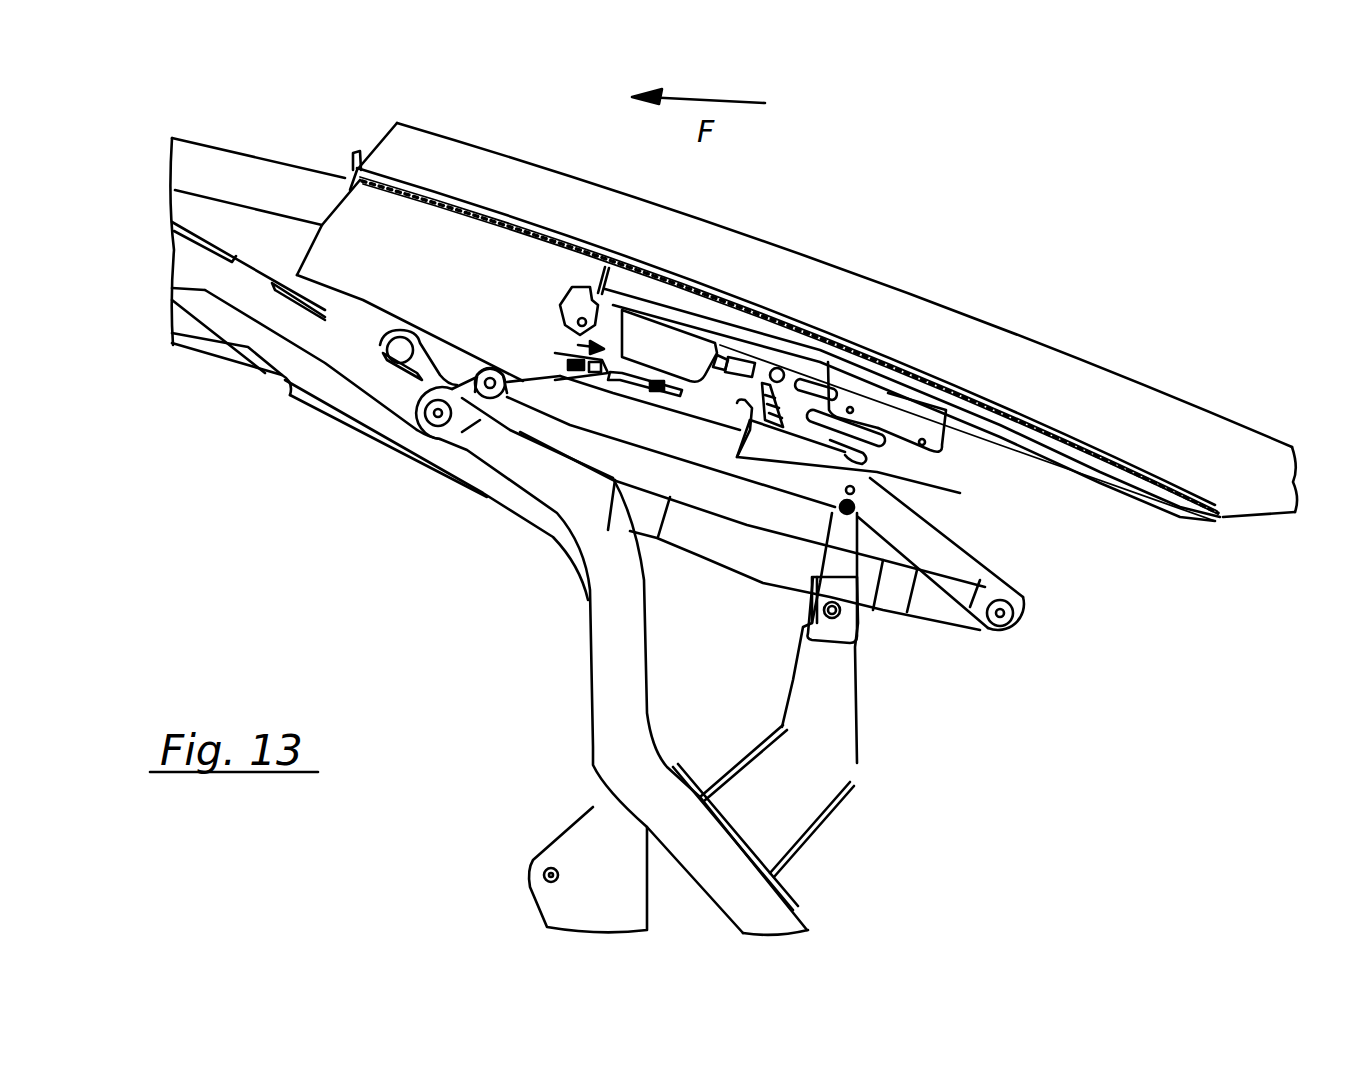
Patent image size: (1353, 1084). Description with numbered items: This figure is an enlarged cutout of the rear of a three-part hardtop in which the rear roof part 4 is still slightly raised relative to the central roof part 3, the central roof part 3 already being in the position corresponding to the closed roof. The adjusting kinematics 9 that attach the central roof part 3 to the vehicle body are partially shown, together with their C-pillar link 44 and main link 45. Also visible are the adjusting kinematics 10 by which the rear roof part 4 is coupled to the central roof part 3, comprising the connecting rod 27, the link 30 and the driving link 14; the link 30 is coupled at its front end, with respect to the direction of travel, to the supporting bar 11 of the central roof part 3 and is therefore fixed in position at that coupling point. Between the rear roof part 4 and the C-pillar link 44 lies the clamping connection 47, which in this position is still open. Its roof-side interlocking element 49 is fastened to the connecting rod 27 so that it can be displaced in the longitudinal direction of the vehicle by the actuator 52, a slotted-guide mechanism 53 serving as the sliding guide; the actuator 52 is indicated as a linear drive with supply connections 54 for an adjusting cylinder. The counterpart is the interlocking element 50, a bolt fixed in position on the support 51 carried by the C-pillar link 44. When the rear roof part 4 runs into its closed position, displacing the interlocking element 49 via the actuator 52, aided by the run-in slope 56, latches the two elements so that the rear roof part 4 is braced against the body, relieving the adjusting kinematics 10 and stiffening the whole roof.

The central roof part 3 is at (268, 190).
The rear roof part 4 is at (1212, 458).
The adjusting kinematics 9 is at (553, 647).
The adjusting kinematics 10 is at (1003, 515).
The supporting bar 11 is at (372, 392).
The driving link 14 is at (697, 457).
The connecting rod 27 is at (904, 536).
The link 30 is at (935, 612).
The C-pillar link 44 is at (676, 800).
The main link 45 is at (590, 806).
The clamping connection 47 is at (796, 327).
The interlocking element 49 is at (745, 410).
The interlocking element 50 is at (838, 508).
The support 51 is at (855, 728).
The actuator 52 is at (578, 345).
The slotted-guide mechanism 53 is at (833, 372).
The supply connections 54 is at (574, 384).
The run-in slope 56 is at (872, 462).